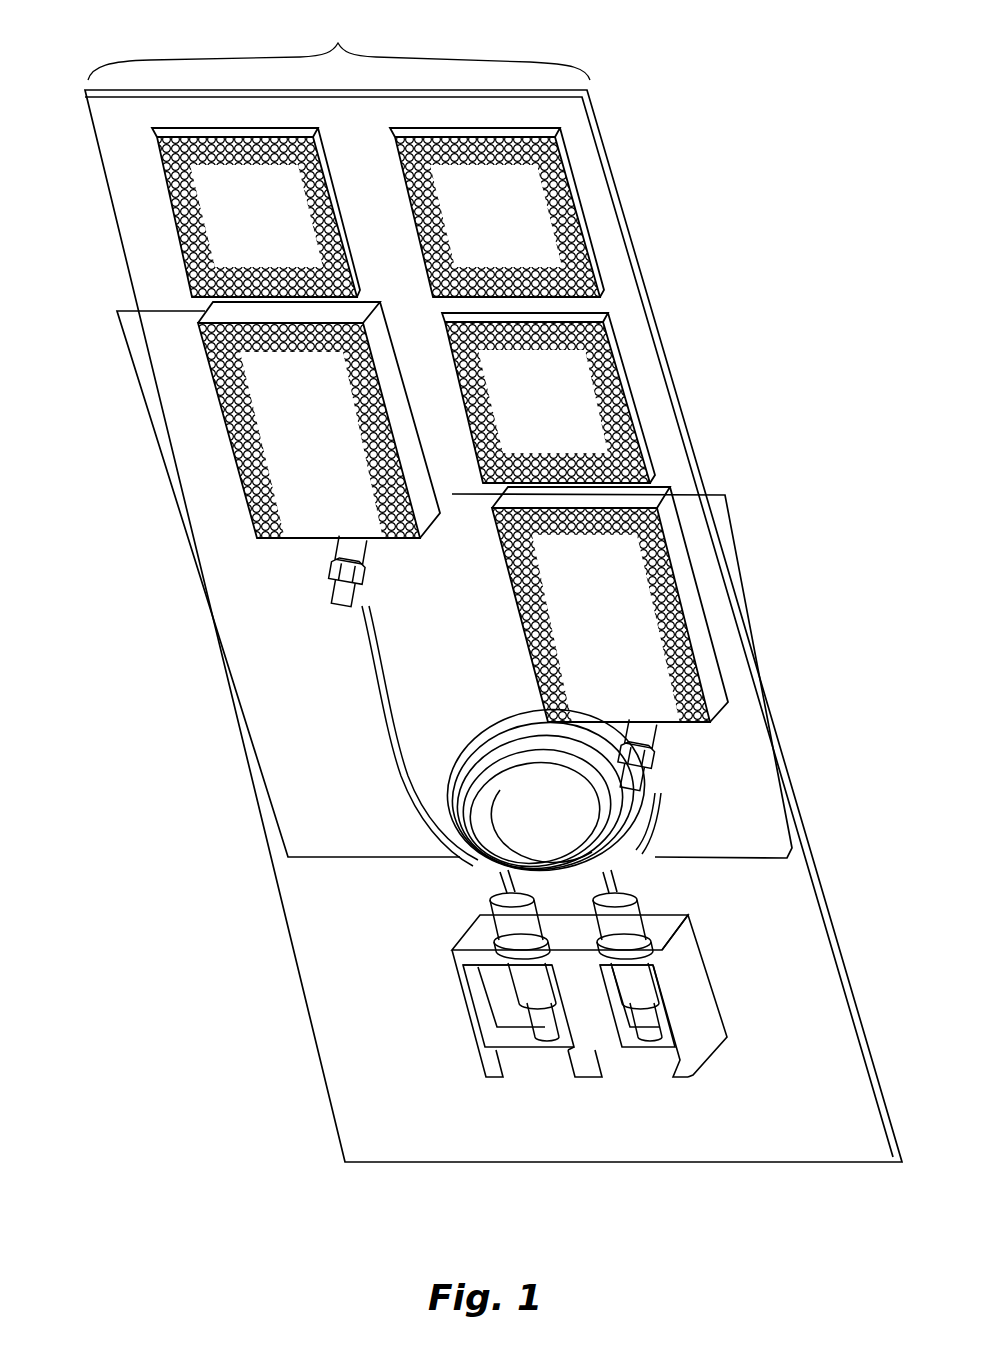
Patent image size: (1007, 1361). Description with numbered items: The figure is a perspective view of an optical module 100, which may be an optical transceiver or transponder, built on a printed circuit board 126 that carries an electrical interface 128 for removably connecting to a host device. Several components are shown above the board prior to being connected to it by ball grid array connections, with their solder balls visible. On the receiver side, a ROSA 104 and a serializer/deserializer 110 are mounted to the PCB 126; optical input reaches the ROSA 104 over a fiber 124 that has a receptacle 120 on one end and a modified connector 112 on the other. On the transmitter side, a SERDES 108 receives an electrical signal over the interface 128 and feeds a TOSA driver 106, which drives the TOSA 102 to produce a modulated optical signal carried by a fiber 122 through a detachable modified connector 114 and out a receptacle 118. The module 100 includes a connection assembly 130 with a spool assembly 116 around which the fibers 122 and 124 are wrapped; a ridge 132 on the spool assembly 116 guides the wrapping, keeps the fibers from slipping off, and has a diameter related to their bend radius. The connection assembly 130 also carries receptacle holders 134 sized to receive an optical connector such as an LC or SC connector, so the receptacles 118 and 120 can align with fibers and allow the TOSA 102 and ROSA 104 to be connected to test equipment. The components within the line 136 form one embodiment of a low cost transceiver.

The optical module 100 is at (482, 587).
The TOSA 102 is at (584, 627).
The ROSA 104 is at (292, 440).
The TOSA driver 106 is at (525, 412).
The SERDES 108 is at (477, 229).
The serializer/deserializer 110 is at (235, 229).
The modified connector 112 is at (329, 591).
The modified connector 114 is at (689, 763).
The spool assembly 116 is at (531, 774).
The receptacle 118 is at (635, 987).
The receptacle 120 is at (530, 997).
The fiber 122 is at (662, 820).
The fiber 124 is at (410, 768).
The printed circuit board 126 is at (126, 259).
The electrical interface 128 is at (339, 46).
The connection assembly 130 is at (599, 996).
The ridge 132 is at (487, 765).
The receptacle holders 134 is at (467, 1025).
The line 136 is at (150, 446).